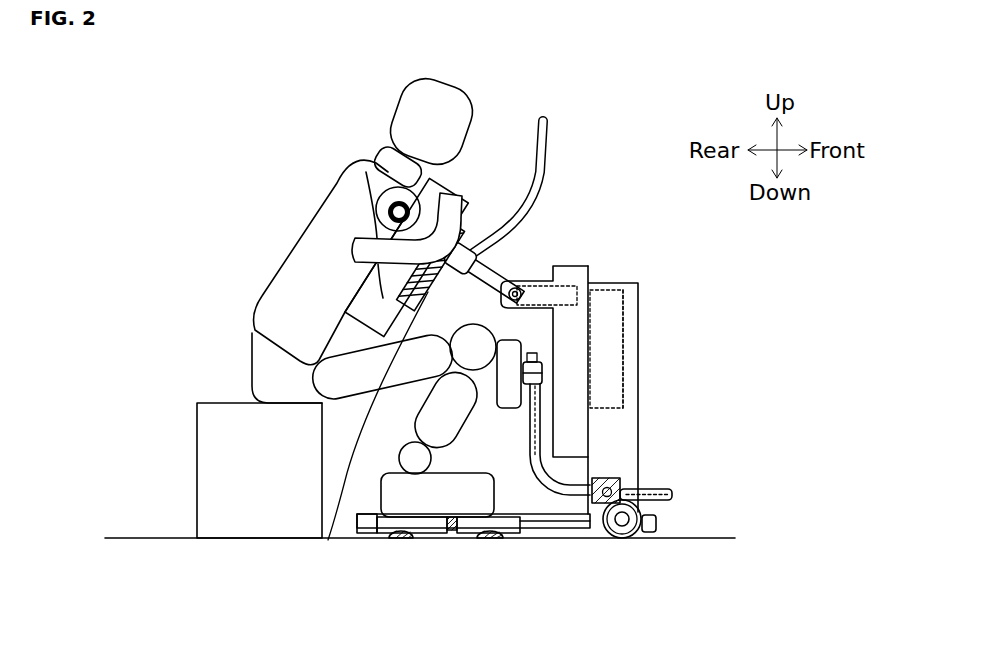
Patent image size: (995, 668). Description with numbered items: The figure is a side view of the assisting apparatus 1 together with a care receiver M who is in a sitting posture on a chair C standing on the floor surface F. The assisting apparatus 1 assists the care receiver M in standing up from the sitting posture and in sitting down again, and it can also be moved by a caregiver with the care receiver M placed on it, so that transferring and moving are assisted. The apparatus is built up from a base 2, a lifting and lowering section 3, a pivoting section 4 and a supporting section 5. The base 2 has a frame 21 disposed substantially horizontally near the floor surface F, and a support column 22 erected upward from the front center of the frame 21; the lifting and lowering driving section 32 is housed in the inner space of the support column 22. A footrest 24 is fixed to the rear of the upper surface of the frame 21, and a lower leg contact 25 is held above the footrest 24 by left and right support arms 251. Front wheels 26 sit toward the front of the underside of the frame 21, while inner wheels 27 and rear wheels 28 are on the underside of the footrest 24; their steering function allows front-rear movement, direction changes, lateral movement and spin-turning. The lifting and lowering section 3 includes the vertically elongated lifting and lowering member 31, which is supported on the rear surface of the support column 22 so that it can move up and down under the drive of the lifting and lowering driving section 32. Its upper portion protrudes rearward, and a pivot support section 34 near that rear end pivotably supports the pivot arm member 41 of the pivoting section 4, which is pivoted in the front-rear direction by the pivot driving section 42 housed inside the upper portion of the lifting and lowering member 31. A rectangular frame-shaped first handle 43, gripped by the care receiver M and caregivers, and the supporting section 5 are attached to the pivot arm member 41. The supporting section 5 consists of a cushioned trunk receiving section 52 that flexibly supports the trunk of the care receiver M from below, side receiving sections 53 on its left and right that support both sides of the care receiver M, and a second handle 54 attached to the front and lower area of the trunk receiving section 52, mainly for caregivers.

The assisting apparatus 1 is at (489, 351).
The base 2 is at (537, 435).
The lifting and lowering section 3 is at (620, 349).
The pivoting section 4 is at (552, 213).
The supporting section 5 is at (353, 374).
The frame 21 is at (594, 528).
The support column 22 is at (634, 384).
The footrest 24 is at (560, 524).
The lower leg contact 25 is at (607, 417).
The front wheel 26 is at (631, 525).
The inner wheel 27 is at (500, 538).
The rear wheel 28 is at (391, 540).
The lifting and lowering member 31 is at (598, 271).
The lifting and lowering driving section 32 is at (605, 322).
The pivot support section 34 is at (556, 292).
The pivot arm member 41 is at (489, 279).
The pivot driving section 42 is at (585, 274).
The first handle 43 is at (548, 150).
The trunk receiving section 52 is at (379, 300).
The side receiving section 53 is at (380, 241).
The second handle 54 is at (327, 541).
The support arm 251 is at (626, 426).
The care receiver M is at (275, 273).
The chair C is at (212, 468).
The floor surface F is at (150, 537).